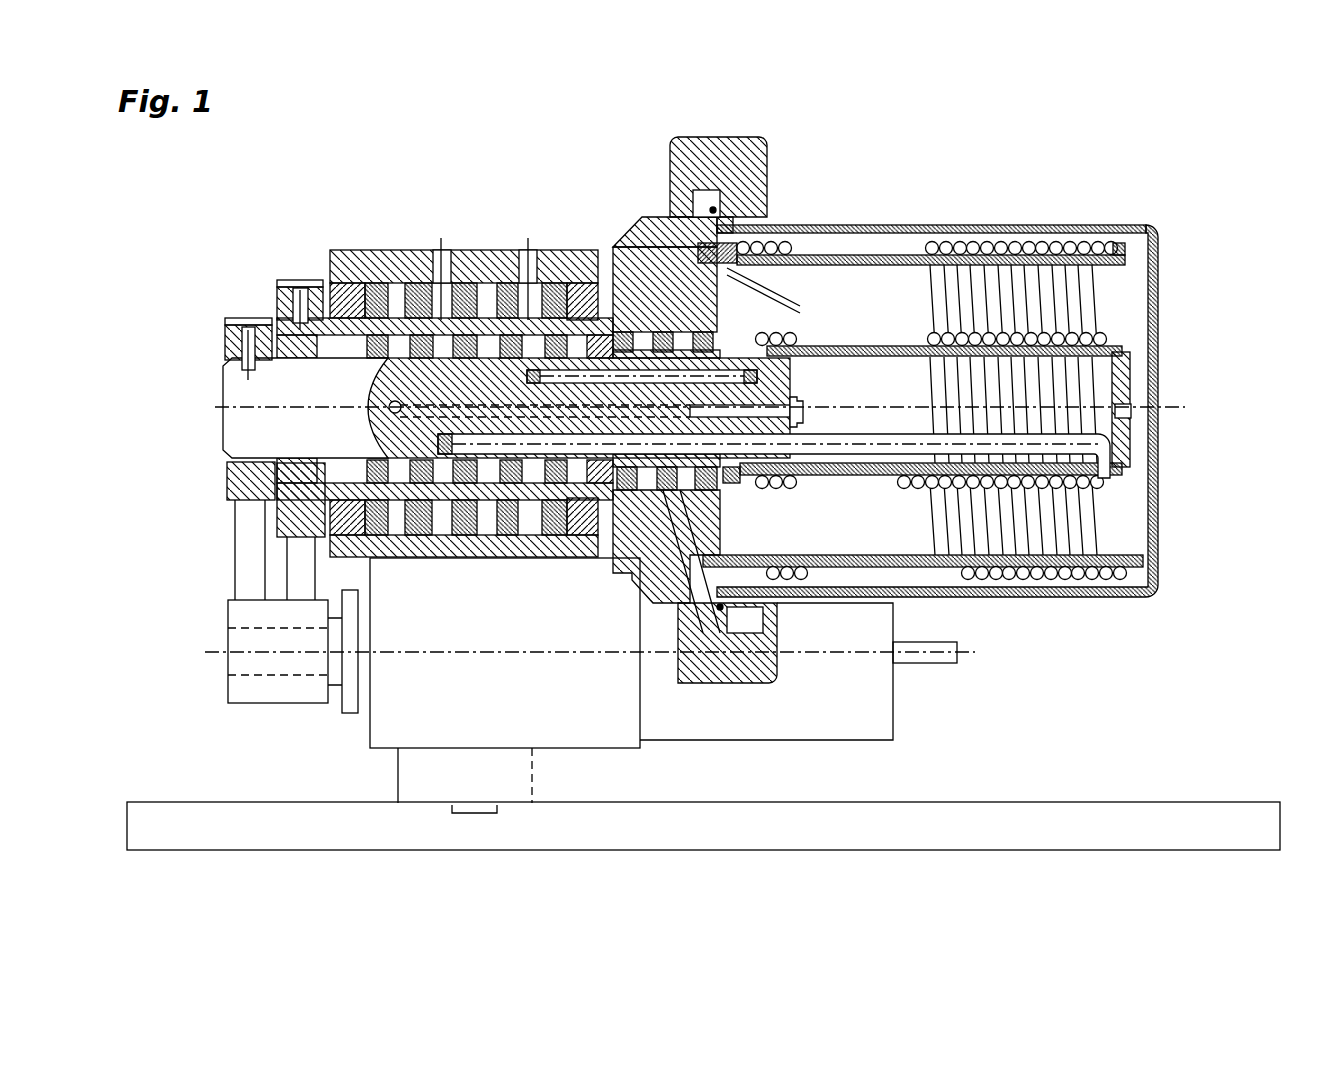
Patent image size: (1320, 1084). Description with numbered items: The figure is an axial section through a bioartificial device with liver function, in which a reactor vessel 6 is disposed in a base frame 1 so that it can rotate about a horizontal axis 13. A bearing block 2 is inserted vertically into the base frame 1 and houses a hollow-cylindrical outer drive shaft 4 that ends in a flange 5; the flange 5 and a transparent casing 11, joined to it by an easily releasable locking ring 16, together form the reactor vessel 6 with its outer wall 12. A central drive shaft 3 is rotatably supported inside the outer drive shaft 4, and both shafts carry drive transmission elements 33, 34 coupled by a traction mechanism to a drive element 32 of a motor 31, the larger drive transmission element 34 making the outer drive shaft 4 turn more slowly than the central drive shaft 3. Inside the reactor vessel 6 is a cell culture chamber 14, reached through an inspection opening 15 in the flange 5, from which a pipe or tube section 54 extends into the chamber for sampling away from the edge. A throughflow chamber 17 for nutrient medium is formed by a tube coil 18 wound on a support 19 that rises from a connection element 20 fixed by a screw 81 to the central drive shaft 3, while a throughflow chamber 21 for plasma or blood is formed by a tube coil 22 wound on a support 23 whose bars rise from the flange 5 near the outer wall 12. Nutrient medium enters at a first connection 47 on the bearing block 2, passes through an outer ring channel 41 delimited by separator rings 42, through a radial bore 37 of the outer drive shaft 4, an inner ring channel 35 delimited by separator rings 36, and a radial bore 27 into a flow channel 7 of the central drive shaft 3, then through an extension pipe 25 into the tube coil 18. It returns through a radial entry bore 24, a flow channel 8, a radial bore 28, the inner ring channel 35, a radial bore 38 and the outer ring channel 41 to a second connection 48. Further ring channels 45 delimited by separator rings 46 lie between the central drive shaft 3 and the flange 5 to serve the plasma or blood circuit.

The base frame 1 is at (430, 790).
The bearing block 2 is at (342, 262).
The central drive shaft 3 is at (255, 422).
The hollow-cylindrical outer drive shaft 4 is at (295, 497).
The flange 5 is at (632, 262).
The reactor vessel 6 is at (972, 200).
The flow channel 7 is at (566, 500).
The flow channel 8 is at (588, 330).
The casing 11 is at (1158, 565).
The outer wall 12 is at (1030, 592).
The horizontal axis 13 is at (1177, 407).
The cell culture chamber 14 is at (1135, 288).
The inspection opening 15 is at (657, 290).
The locking ring 16 is at (745, 168).
The throughflow chamber 17 is at (1070, 327).
The tube coil 18 is at (922, 493).
The support 19 is at (1122, 348).
The connection element 20 is at (745, 383).
The throughflow chamber 21 is at (1030, 242).
The tube coil 22 is at (1072, 575).
The support 23 is at (1123, 257).
The radial entry bore 24 is at (780, 410).
The extension pipe 25 is at (1130, 453).
The radial bore 27 is at (365, 508).
The radial bore 28 is at (541, 293).
The motor 31 is at (373, 725).
The drive element 32 is at (297, 690).
The drive transmission element 33 is at (253, 318).
The drive transmission element 34 is at (297, 283).
The inner ring channel 35 is at (497, 500).
The separator ring 36 is at (530, 500).
The radial bore 37 is at (418, 290).
The radial bore 38 is at (515, 300).
The outer ring channel 41 is at (455, 555).
The separator ring 42 is at (410, 532).
The ring channel 45 is at (716, 470).
The separator ring 46 is at (663, 485).
The connection 47 is at (440, 330).
The connection 48 is at (530, 320).
The pipe or tube section 54 is at (748, 337).
The screw 81 is at (797, 400).